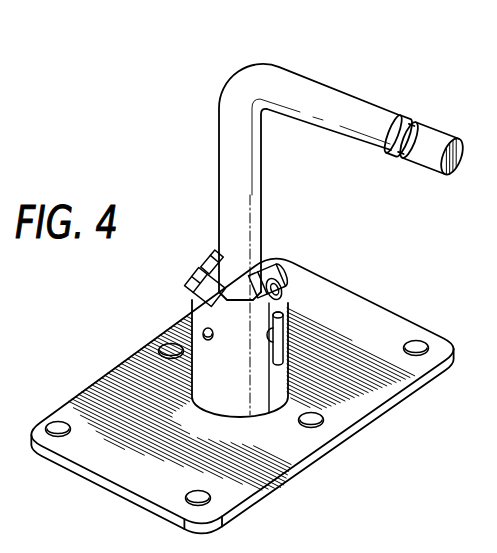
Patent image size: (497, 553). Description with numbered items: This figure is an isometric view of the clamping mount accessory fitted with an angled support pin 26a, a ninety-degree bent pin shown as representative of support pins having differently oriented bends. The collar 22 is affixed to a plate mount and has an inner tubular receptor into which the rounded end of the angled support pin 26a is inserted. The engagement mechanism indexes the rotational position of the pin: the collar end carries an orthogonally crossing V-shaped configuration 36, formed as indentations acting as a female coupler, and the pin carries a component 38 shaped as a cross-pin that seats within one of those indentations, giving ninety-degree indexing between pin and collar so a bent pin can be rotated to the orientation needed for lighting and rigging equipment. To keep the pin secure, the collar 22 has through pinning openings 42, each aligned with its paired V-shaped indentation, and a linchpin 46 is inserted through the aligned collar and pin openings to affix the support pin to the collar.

The collar 22 is at (186, 288).
The angled support pin 26a is at (277, 83).
The V-shaped configuration 36 is at (206, 298).
The cross-pin component 38 is at (214, 257).
The collar pinning opening 42 is at (203, 333).
The linchpin 46 is at (281, 333).